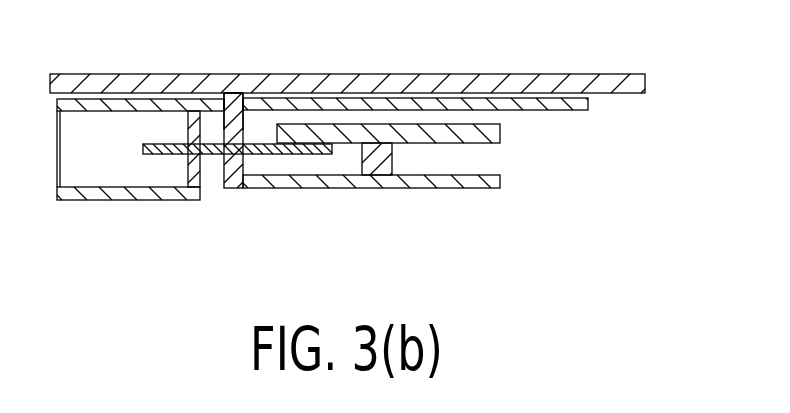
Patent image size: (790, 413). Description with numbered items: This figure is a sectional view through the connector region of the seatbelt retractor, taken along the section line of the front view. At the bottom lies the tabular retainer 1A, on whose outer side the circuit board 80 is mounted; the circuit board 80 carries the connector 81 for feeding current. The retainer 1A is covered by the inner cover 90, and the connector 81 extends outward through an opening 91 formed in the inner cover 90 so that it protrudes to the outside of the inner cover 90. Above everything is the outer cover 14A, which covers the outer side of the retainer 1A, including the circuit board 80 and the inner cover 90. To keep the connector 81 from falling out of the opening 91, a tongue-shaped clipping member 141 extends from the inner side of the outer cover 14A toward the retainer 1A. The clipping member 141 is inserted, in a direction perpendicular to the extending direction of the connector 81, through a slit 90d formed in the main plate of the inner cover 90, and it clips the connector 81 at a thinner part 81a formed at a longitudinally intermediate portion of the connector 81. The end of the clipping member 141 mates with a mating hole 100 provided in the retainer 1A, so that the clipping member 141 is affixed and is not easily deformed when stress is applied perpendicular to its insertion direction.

The outer cover 14A is at (580, 73).
The inner cover 90 is at (588, 103).
The slit 90d is at (224, 101).
The opening 91 is at (188, 143).
The mating hole 100 is at (233, 188).
The clipping member 141 is at (248, 127).
The thinner part 81a is at (252, 162).
The connector 81 is at (322, 146).
The circuit board 80 is at (500, 132).
The retainer 1A is at (397, 188).